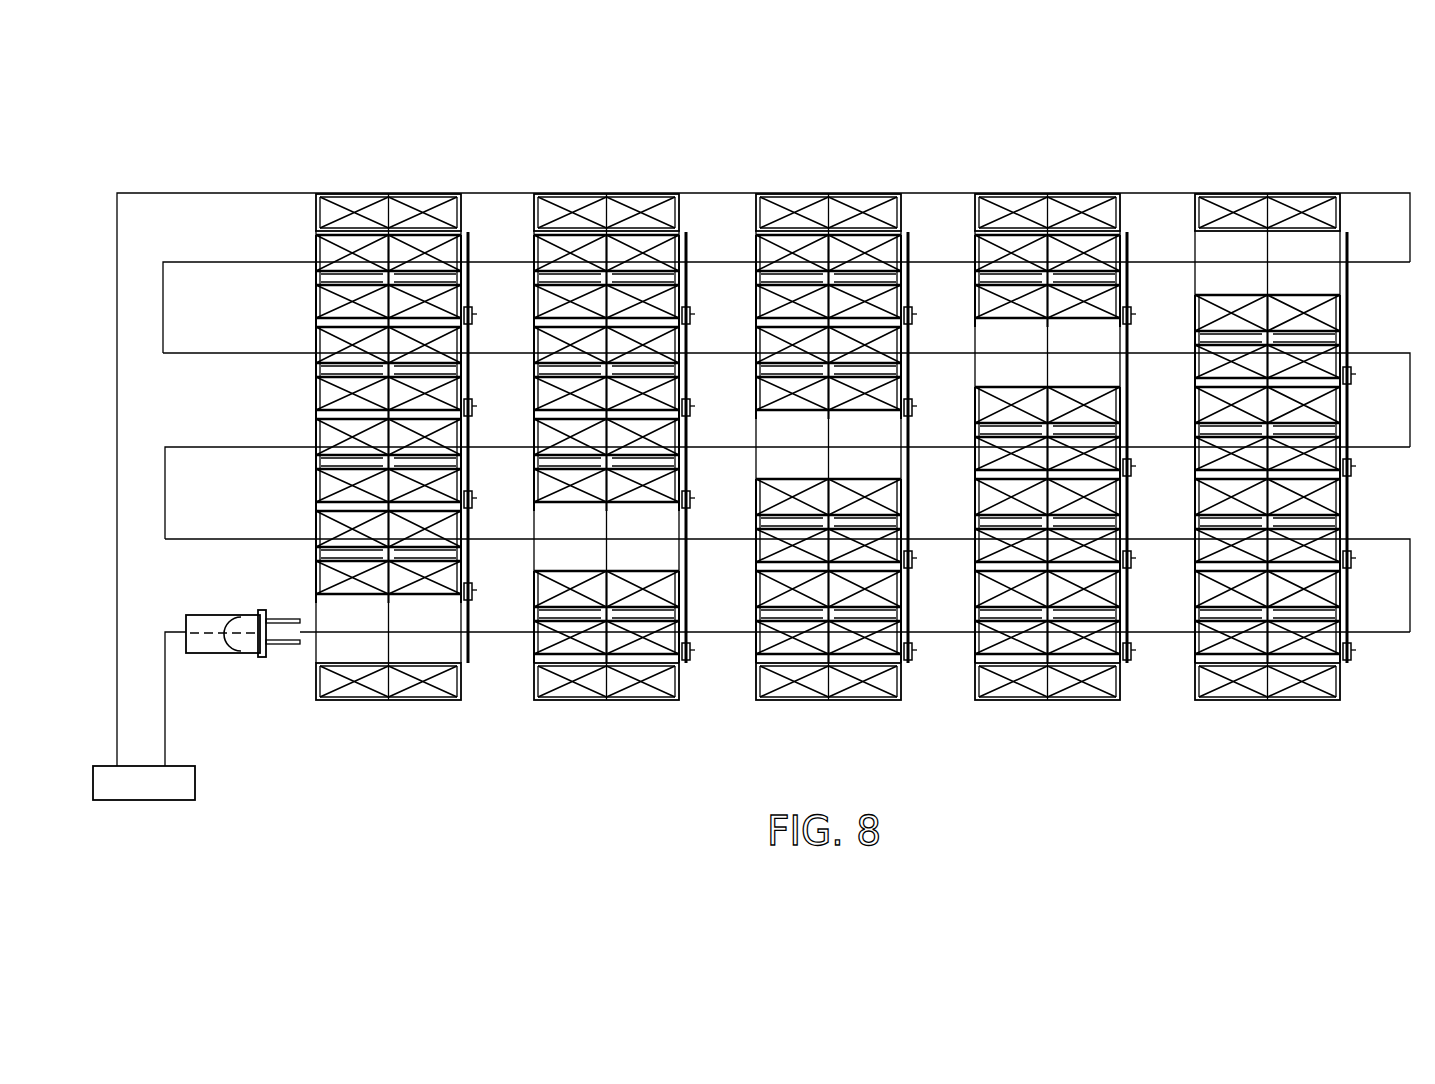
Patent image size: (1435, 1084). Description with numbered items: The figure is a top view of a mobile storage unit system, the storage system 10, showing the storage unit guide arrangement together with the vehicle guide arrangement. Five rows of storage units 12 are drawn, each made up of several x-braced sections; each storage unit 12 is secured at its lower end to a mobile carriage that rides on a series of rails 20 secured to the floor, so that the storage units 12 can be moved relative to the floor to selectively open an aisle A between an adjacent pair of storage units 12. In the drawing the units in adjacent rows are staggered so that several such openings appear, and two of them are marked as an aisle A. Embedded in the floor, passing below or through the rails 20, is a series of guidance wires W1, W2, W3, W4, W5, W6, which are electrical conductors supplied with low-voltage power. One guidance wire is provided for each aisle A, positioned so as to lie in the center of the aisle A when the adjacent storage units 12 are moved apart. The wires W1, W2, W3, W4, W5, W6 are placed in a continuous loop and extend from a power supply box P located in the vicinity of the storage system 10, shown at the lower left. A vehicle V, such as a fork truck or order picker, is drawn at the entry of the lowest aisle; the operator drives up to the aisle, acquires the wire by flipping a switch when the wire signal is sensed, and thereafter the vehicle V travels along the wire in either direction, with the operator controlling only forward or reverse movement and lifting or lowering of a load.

The storage system 10 is at (764, 491).
The storage unit 12 is at (816, 461).
The rail 20 is at (675, 528).
The guidance wire W1 is at (158, 193).
The guidance wire W2 is at (203, 262).
The guidance wire W3 is at (203, 353).
The guidance wire W4 is at (205, 447).
The guidance wire W5 is at (185, 539).
The guidance wire W6 is at (530, 634).
The aisle A is at (313, 608).
The vehicle V is at (220, 646).
The power supply box P is at (145, 795).